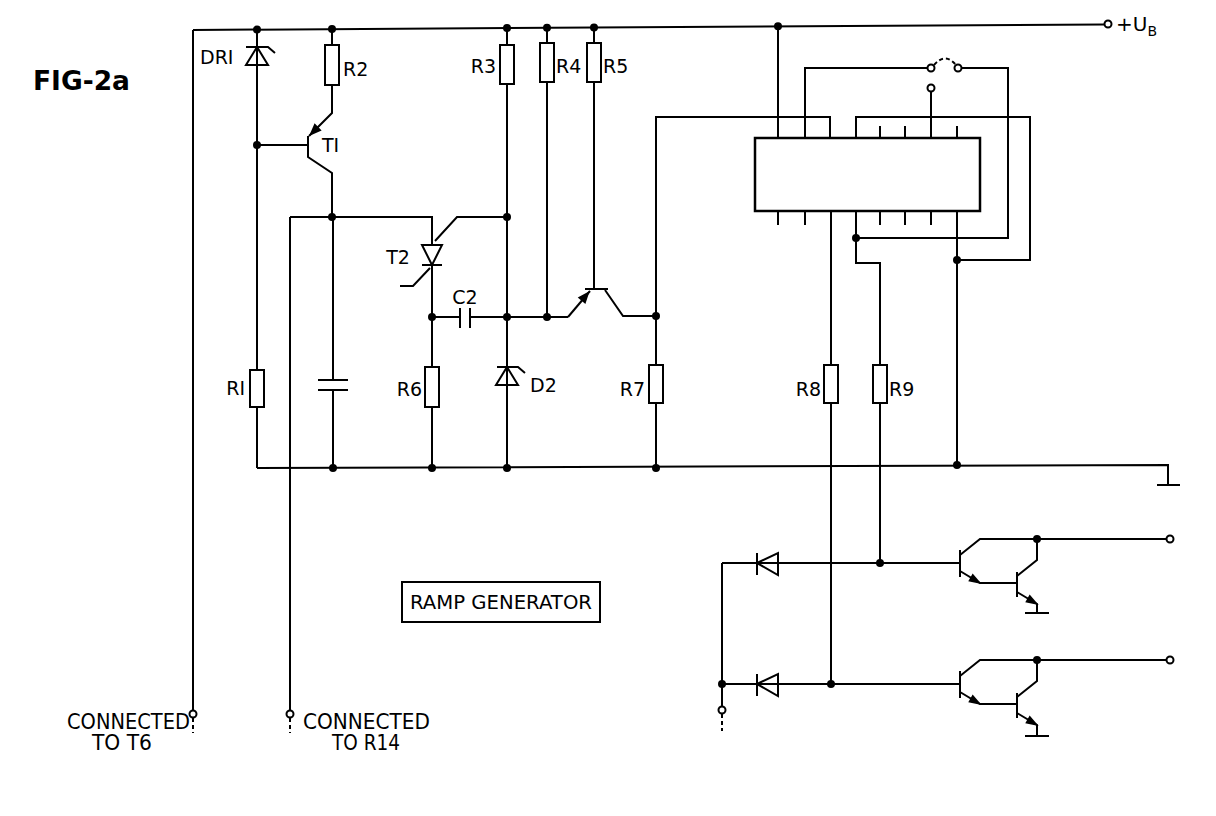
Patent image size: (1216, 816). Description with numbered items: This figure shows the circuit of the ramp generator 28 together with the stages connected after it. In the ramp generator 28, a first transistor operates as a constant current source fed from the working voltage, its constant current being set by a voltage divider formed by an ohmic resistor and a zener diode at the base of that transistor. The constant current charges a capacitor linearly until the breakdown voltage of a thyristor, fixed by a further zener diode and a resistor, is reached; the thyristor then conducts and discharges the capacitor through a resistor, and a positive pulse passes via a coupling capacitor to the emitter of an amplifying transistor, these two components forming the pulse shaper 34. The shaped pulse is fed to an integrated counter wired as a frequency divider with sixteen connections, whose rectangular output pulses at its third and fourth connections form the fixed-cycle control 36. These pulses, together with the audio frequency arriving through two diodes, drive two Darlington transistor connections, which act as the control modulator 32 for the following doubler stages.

The ramp generator 28 is at (302, 327).
The control modulator 32 is at (1105, 617).
The pulse shaper 34 is at (618, 262).
The fixed-cycle control 36 is at (742, 312).